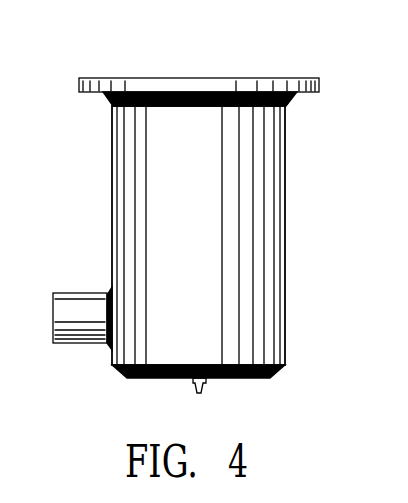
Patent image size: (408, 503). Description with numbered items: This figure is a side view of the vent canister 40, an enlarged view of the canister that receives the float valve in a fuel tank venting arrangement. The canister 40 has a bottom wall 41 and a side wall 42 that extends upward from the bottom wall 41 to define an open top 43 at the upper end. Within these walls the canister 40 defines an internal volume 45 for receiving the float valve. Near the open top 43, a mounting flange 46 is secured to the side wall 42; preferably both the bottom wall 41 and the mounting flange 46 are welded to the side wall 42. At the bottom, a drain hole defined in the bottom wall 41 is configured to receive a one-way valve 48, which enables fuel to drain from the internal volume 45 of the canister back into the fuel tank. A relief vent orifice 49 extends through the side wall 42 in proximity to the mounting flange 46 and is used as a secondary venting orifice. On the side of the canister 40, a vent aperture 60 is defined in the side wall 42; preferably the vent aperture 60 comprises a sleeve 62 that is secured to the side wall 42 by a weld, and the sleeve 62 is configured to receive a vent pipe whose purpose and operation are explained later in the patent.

The vent canister 40 is at (125, 168).
The bottom wall 41 is at (258, 378).
The side wall 42 is at (287, 232).
The open top 43 is at (213, 78).
The internal volume 45 is at (237, 183).
The mounting flange 46 is at (93, 78).
The one-way valve 48 is at (195, 388).
The relief vent orifice 49 is at (287, 115).
The vent aperture 60 is at (117, 349).
The sleeve 62 is at (64, 345).